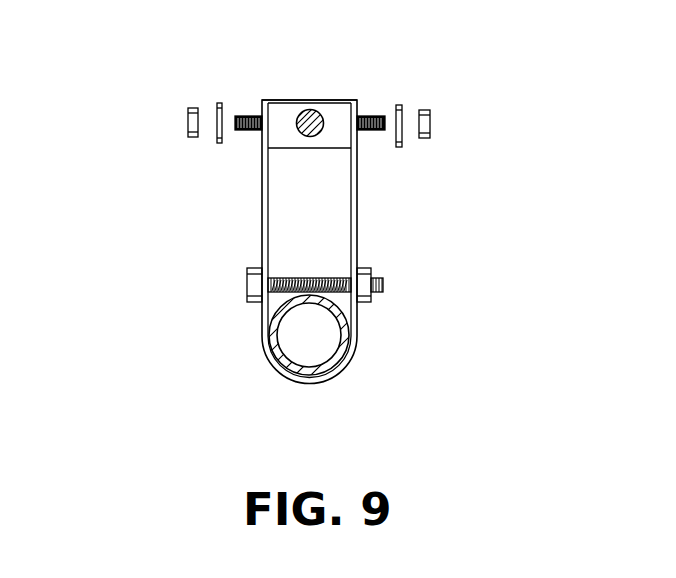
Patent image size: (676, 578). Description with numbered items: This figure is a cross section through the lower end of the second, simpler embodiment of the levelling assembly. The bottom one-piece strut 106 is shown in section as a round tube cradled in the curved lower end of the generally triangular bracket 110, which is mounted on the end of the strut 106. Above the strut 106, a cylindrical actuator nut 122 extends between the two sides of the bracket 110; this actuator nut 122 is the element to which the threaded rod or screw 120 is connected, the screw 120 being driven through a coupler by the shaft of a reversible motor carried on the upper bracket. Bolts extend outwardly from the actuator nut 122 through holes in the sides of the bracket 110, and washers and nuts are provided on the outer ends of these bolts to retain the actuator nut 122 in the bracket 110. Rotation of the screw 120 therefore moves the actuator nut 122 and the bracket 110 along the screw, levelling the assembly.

The bottom strut 106 is at (348, 357).
The bracket 110 is at (357, 240).
The threaded rod or screw 120 is at (300, 116).
The cylindrical actuator nut 122 is at (322, 101).